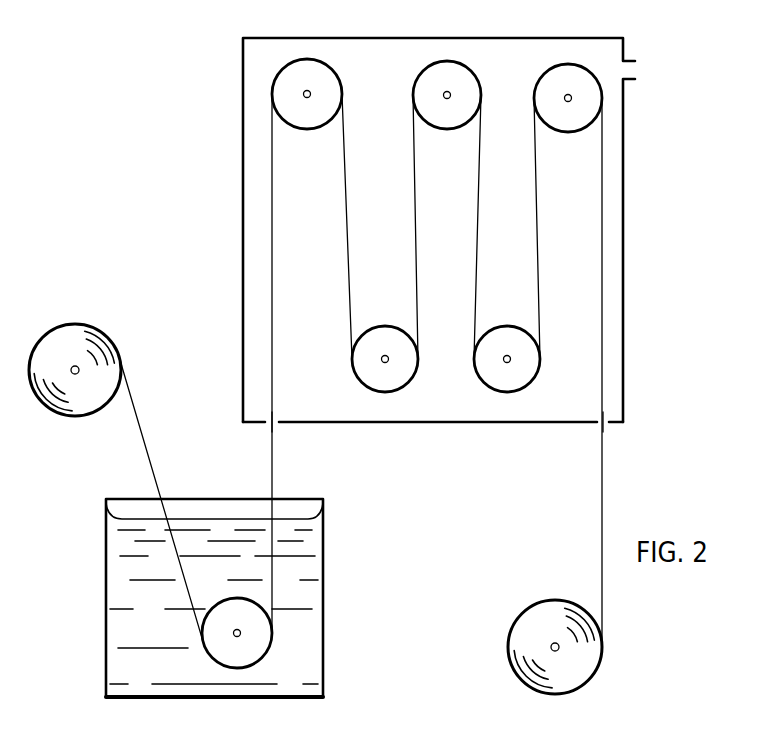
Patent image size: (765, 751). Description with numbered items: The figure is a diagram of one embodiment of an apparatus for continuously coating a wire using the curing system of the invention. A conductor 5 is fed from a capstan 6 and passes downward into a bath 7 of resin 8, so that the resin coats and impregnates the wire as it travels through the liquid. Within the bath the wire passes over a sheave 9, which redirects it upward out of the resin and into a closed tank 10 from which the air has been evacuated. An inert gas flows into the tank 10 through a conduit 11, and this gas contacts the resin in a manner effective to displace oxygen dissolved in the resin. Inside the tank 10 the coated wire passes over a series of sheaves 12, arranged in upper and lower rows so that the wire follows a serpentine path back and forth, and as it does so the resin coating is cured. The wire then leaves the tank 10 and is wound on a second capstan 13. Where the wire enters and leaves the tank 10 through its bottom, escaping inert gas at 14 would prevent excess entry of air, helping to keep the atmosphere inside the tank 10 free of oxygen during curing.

The conductor 5 is at (150, 446).
The capstan 6 is at (88, 356).
The bath 7 is at (106, 600).
The resin 8 is at (202, 689).
The sheave 9 is at (258, 641).
The closed tank 10 is at (402, 424).
The conduit 11 is at (636, 72).
The sheaves 12 is at (320, 80).
The capstan 13 is at (583, 673).
The escaping inert gas 14 is at (274, 426).